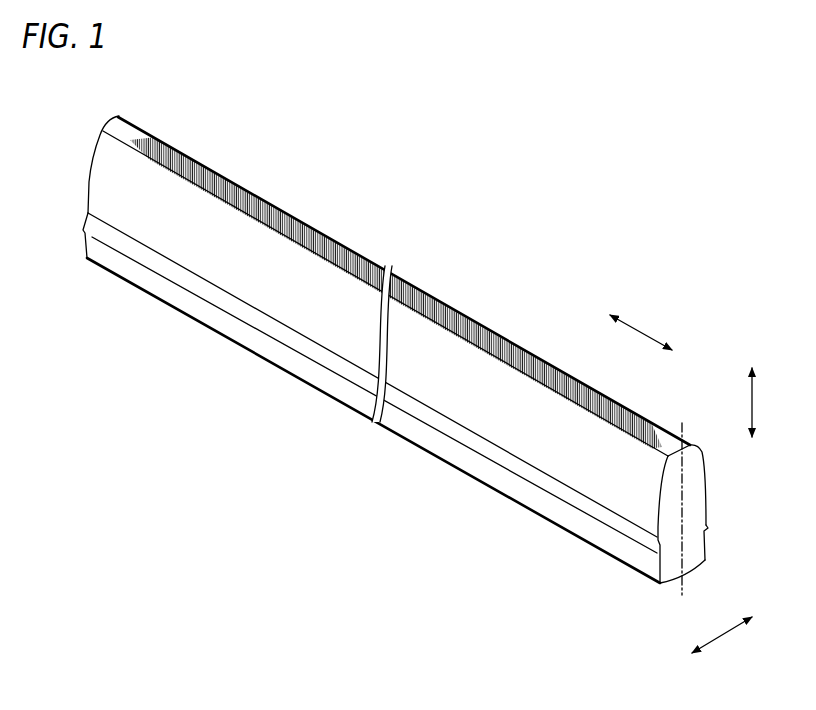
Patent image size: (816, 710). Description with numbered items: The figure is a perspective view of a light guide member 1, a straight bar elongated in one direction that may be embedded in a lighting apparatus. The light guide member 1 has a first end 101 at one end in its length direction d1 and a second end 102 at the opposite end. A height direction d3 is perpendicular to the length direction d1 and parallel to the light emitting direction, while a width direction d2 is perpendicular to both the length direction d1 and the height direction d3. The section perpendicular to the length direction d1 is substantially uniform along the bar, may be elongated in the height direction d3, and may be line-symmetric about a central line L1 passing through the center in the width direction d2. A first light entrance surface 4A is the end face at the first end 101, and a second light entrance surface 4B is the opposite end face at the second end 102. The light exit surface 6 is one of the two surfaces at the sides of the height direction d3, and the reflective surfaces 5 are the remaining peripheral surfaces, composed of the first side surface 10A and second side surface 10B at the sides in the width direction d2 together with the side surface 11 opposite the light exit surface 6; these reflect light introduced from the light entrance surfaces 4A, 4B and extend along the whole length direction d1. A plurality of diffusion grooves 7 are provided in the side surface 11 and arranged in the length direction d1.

The light guide member 1 is at (399, 365).
The first light entrance surface 4A is at (692, 500).
The second light entrance surface 4B is at (88, 173).
The reflective surface 5 is at (532, 390).
The light exit surface 6 is at (692, 568).
The diffusion groove 7 is at (462, 328).
The first side surface 10A is at (570, 468).
The second side surface 10B is at (705, 472).
The side surface 11 is at (668, 442).
The first end 101 is at (693, 538).
The second end 102 is at (88, 193).
The central line L1 is at (680, 433).
The length direction d1 is at (641, 327).
The width direction d2 is at (722, 643).
The height direction d3 is at (767, 402).